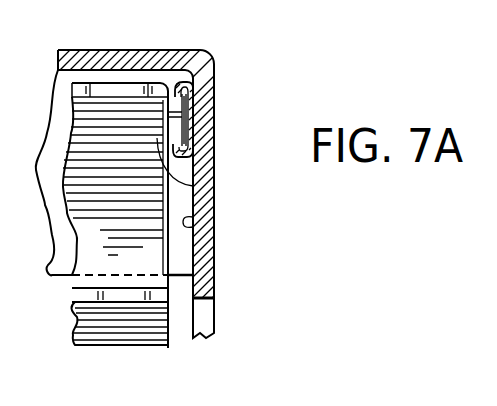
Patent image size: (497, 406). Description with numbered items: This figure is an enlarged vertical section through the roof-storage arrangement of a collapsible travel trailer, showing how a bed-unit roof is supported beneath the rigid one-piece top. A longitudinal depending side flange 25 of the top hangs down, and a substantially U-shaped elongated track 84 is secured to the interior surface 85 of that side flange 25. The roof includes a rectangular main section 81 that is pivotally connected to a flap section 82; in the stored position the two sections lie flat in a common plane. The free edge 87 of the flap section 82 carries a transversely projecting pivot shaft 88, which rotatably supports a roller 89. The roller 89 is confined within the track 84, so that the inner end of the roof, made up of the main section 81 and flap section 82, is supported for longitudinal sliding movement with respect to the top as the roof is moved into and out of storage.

The longitudinal depending side flange 25 is at (214, 264).
The main section 81 is at (157, 330).
The flap section 82 is at (145, 110).
The track 84 is at (182, 157).
The interior surface 85 is at (195, 222).
The free edge 87 is at (118, 85).
The pivot shaft 88 is at (193, 186).
The roller 89 is at (188, 111).